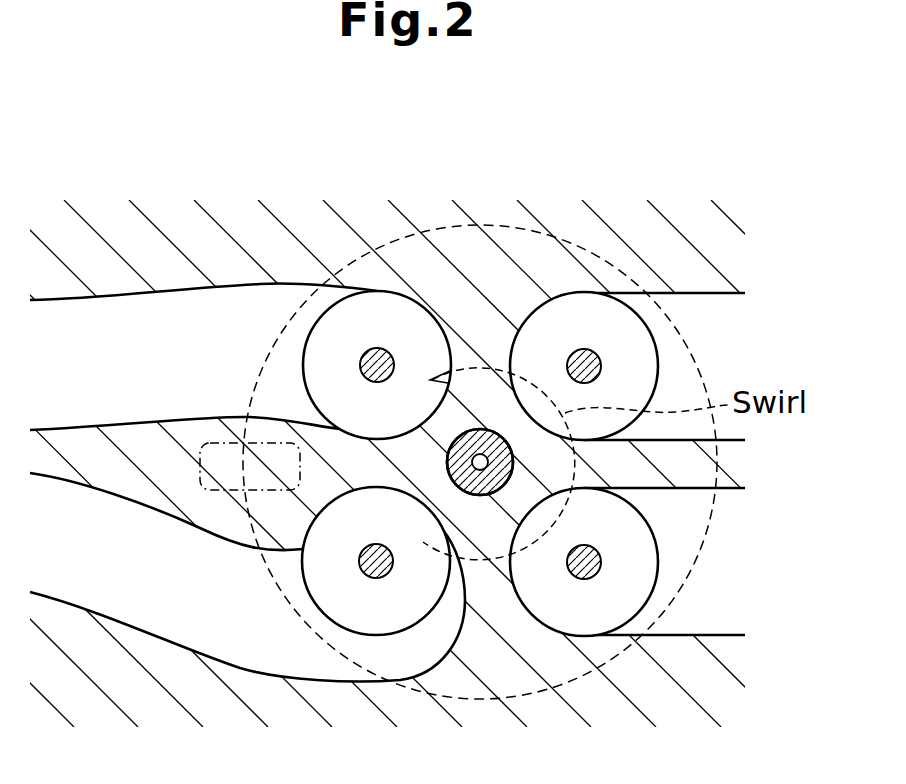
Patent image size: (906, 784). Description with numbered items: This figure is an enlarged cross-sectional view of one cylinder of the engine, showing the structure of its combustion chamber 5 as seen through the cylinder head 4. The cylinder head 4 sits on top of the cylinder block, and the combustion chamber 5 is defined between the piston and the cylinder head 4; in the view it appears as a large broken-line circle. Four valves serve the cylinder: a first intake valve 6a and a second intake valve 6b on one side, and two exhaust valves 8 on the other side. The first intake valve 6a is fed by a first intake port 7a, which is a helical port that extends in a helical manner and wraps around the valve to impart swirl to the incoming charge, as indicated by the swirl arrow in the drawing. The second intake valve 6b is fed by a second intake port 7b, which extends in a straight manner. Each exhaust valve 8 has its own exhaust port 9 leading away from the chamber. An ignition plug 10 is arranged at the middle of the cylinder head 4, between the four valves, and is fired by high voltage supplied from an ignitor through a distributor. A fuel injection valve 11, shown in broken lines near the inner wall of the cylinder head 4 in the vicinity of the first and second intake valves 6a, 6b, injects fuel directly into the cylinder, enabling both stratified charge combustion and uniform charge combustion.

The cylinder head 4 is at (695, 227).
The combustion chamber 5 is at (477, 225).
The first intake valve 6a is at (387, 612).
The second intake valve 6b is at (400, 310).
The first intake port 7a is at (210, 632).
The second intake port 7b is at (185, 307).
The exhaust valve 8 is at (575, 307).
The exhaust port 9 is at (703, 303).
The ignition plug 10 is at (497, 433).
The fuel injection valve 11 is at (198, 437).